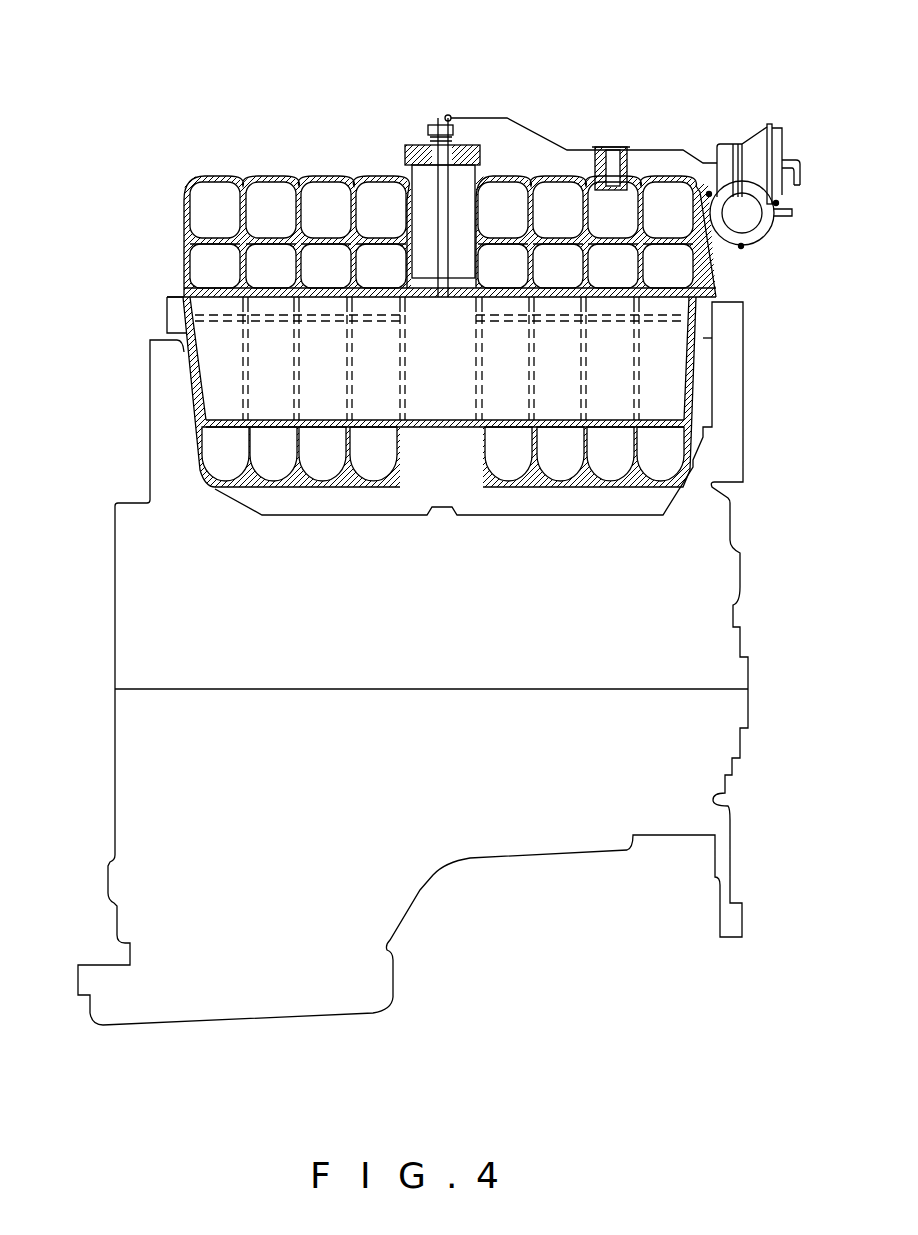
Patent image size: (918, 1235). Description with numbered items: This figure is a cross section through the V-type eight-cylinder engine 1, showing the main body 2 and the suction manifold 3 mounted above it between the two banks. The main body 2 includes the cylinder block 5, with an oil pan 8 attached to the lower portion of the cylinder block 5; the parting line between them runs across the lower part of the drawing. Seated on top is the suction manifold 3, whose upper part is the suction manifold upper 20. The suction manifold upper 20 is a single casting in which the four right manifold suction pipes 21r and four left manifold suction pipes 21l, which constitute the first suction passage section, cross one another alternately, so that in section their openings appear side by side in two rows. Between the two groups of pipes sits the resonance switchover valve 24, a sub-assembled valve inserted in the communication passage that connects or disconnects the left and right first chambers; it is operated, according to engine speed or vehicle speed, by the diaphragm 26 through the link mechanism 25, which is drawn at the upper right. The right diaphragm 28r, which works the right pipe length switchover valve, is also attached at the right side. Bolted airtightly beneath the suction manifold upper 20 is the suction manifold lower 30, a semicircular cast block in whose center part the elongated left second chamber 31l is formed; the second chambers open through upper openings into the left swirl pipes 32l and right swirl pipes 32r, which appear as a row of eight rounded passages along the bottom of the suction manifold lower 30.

The engine 1 is at (647, 82).
The main body 2 is at (760, 590).
The suction manifold 3 is at (298, 150).
The cylinder block 5 is at (115, 603).
The oil pan 8 is at (115, 781).
The suction manifold upper 20 is at (368, 172).
The left manifold suction pipe 21l is at (218, 186).
The right manifold suction pipe 21r is at (274, 186).
The resonance switchover valve 24 is at (458, 184).
The link mechanism 25 is at (547, 140).
The diaphragm 26 is at (773, 128).
The right diaphragm 28r is at (772, 236).
The suction manifold lower 30 is at (438, 437).
The left second chamber 31l is at (456, 386).
The left swirl pipe 32l is at (228, 478).
The right swirl pipe 32r is at (276, 478).